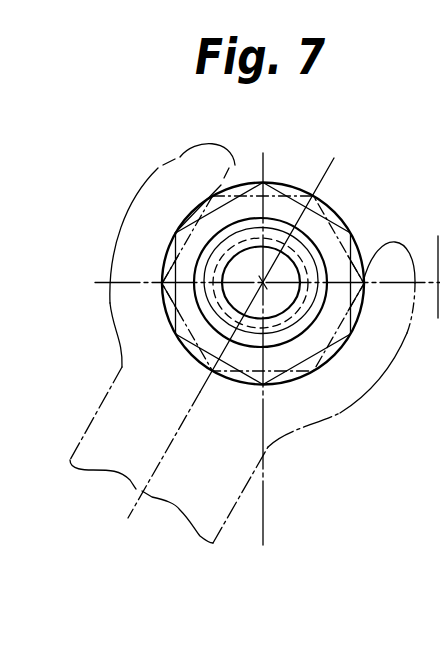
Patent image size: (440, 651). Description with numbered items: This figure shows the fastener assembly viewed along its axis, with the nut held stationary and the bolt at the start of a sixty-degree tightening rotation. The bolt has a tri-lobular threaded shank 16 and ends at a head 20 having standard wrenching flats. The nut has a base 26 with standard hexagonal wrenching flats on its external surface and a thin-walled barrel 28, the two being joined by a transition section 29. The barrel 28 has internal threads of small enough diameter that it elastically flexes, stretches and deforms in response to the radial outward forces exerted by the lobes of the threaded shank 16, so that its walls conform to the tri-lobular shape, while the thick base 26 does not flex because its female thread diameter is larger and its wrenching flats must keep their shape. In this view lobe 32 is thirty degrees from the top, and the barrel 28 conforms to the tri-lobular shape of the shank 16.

The threaded shank 16 is at (268, 250).
The head 20 is at (300, 372).
The base 26 is at (367, 262).
The barrel 28 is at (329, 249).
The transition section 29 is at (379, 246).
The lobe 32 is at (272, 262).